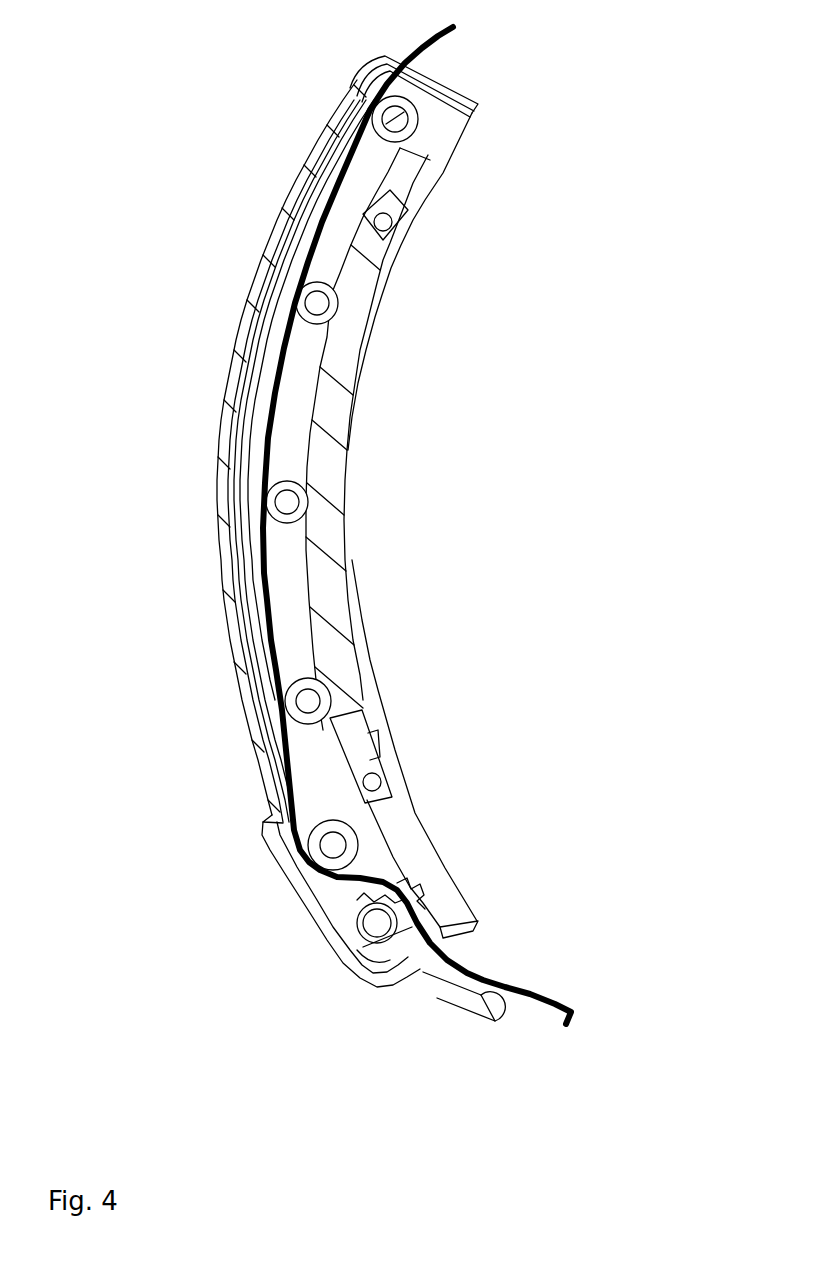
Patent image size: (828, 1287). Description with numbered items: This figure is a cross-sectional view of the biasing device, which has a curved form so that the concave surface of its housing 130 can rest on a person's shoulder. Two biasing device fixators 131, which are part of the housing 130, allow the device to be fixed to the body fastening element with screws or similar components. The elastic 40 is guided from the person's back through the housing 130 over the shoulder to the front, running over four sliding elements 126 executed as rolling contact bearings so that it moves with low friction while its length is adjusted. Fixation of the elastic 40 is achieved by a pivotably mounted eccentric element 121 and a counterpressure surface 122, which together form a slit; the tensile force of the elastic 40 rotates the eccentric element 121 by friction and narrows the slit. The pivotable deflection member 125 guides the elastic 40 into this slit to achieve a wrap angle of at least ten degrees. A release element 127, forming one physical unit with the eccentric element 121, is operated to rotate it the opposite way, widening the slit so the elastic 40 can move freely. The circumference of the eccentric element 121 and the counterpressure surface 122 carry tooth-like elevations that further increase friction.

The elastic 40 is at (538, 995).
The eccentric element 121 is at (375, 925).
The counterpressure surface 122 is at (420, 898).
The deflection member 125 is at (323, 850).
The sliding elements 126 is at (403, 124).
The release element 127 is at (487, 1012).
The housing 130 is at (220, 549).
The biasing device fixator 131 is at (408, 178).